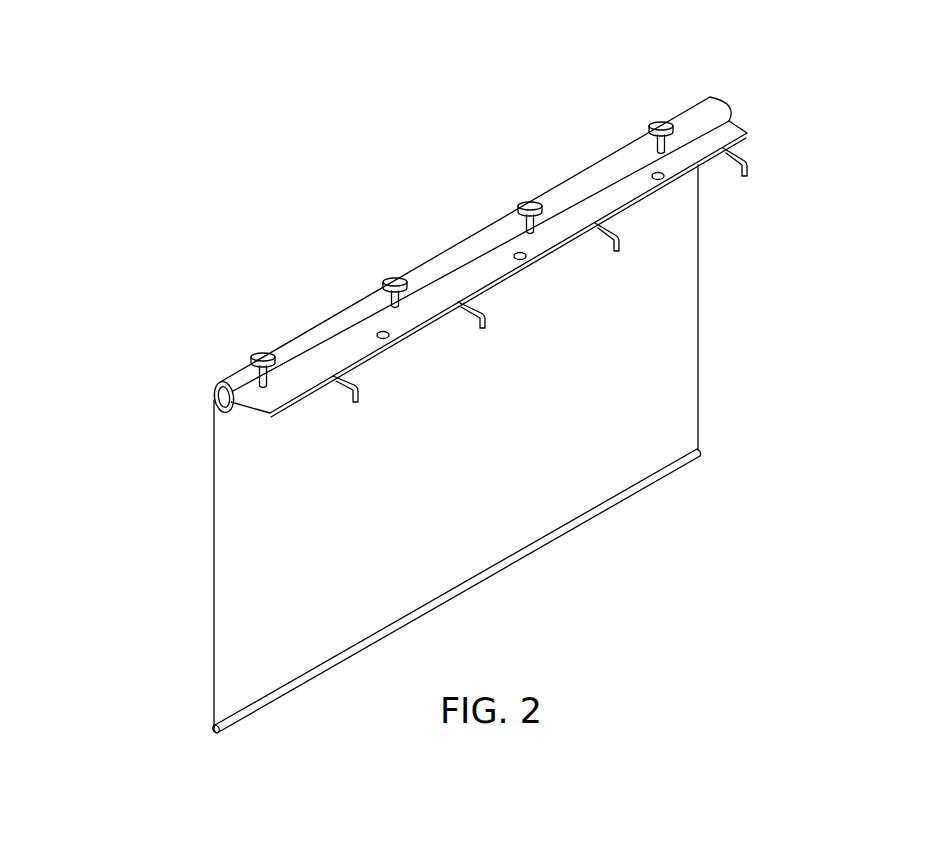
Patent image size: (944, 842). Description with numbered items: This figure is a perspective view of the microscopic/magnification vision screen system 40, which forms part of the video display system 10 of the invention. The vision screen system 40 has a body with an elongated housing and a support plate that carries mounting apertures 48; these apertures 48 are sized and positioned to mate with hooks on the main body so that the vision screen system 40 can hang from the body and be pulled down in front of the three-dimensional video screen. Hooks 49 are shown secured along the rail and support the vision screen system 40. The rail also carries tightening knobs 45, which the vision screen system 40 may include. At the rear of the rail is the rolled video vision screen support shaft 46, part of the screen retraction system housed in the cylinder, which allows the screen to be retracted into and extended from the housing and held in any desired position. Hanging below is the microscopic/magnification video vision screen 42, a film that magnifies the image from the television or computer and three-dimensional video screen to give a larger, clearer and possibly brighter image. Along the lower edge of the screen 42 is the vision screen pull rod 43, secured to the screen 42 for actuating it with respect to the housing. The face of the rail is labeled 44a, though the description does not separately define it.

The video display system 10 is at (200, 236).
The microscopic/magnification vision screen system 40 is at (436, 246).
The microscopic/magnification video vision screen 42 is at (682, 320).
The vision screen pull rod 43 is at (701, 449).
The top face of hanger rail 44a is at (568, 193).
The tightening knobs 45 is at (262, 352).
The video vision screen support shaft 46 is at (212, 399).
The mounting apertures 48 is at (381, 331).
The hooks 49 is at (357, 403).